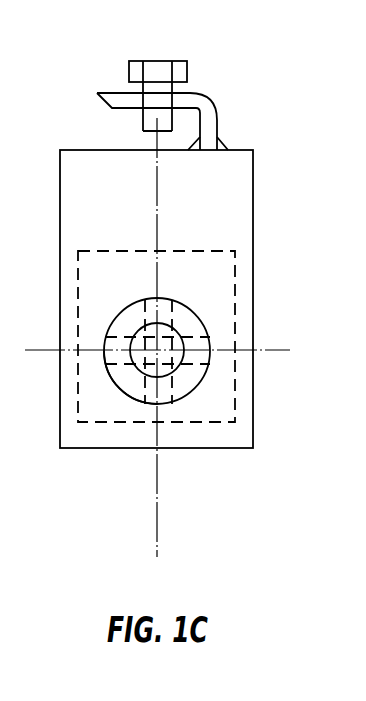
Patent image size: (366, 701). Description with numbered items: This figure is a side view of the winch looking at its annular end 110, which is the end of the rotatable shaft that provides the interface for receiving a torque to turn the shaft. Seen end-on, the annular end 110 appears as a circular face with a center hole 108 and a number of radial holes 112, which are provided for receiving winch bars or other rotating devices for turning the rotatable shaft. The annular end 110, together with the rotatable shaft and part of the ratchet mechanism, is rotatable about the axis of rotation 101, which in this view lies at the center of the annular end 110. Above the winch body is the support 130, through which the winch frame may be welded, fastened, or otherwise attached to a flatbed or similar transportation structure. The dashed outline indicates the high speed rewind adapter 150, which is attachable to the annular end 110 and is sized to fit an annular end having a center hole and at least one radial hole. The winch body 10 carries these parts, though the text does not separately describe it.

The bracket plate body 10 is at (126, 299).
The center axis 101 is at (160, 352).
The opening 108 is at (177, 333).
The outer edge of opening 110 is at (122, 396).
The washer region 112 is at (195, 335).
The clamp bracket 130 is at (193, 100).
The dashed region 150 is at (192, 250).